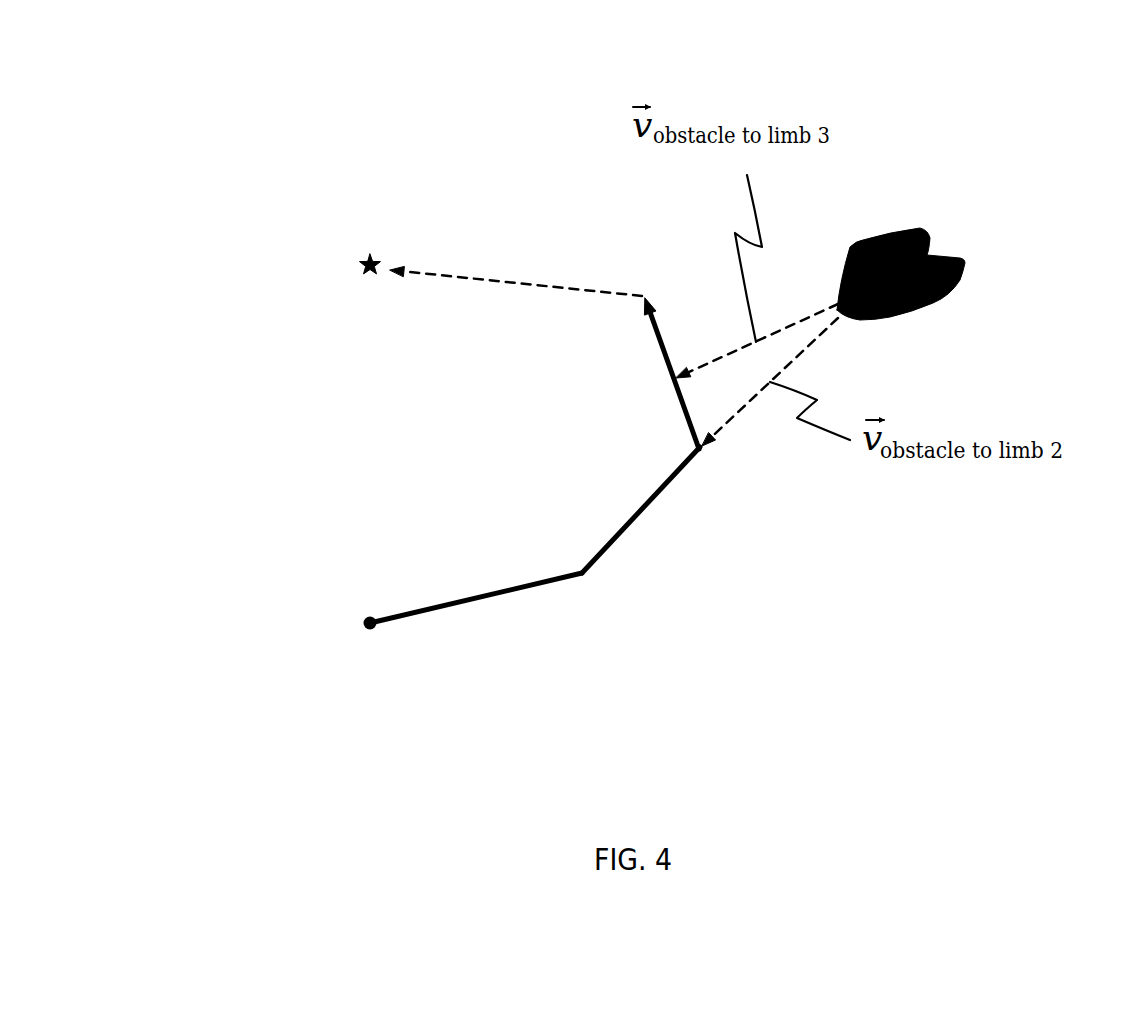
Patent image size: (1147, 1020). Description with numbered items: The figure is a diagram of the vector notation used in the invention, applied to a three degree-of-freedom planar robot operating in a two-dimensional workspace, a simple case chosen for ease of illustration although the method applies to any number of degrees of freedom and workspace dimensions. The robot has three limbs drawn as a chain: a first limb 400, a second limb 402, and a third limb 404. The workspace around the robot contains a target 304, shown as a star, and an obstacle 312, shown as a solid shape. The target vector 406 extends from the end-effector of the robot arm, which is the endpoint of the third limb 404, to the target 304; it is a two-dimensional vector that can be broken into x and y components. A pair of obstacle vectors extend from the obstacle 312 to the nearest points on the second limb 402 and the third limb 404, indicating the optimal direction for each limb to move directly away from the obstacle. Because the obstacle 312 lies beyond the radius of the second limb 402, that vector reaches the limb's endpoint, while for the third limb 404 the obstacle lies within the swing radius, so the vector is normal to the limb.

The target 304 is at (362, 268).
The obstacle 312 is at (958, 258).
The limb 1 400 is at (500, 593).
The limb 2 402 is at (653, 502).
The limb 3 404 is at (705, 365).
The target vector 406 is at (440, 33).